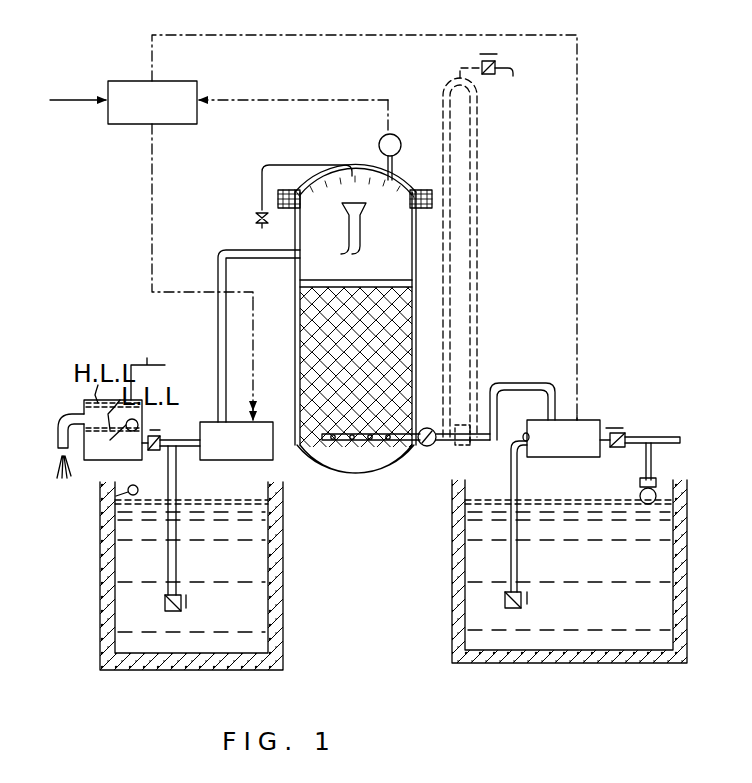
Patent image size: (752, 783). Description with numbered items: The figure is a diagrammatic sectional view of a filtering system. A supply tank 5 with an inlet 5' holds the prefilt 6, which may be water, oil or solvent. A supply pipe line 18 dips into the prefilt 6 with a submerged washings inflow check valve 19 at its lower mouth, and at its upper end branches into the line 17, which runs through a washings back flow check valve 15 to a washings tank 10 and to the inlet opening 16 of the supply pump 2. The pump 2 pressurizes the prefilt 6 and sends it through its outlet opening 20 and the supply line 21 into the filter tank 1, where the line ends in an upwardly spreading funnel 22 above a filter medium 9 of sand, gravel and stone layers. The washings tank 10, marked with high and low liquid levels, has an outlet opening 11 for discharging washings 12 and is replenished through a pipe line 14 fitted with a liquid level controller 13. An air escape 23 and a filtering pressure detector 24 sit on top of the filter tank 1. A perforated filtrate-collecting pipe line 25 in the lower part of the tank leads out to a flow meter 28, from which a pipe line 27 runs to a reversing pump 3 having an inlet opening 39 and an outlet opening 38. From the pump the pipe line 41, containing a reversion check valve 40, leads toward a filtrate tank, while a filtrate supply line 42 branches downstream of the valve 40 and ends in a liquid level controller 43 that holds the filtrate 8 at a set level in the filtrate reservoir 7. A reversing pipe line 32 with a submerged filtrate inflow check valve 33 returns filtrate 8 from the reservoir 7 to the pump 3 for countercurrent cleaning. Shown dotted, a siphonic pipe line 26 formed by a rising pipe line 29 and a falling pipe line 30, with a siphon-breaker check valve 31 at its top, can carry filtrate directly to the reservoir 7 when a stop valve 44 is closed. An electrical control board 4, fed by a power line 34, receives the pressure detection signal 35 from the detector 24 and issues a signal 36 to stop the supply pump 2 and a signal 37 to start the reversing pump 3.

The filter tank 1 is at (293, 270).
The supply pump 2 is at (270, 424).
The reversing pump 3 is at (596, 422).
The electrical control board 4 is at (197, 112).
The supply tank 5 is at (169, 576).
The inlet 5' is at (101, 493).
The prefilt 6 is at (255, 527).
The filtrate reservoir 7 is at (452, 584).
The filtrate 8 is at (468, 552).
The filter medium 9 is at (300, 346).
The washings tank 10 is at (84, 402).
The outlet opening 11 is at (70, 416).
The washings 12 is at (60, 466).
The liquid level controller 13 is at (144, 410).
The pipe line 14 is at (148, 366).
The washings back flow check valve 15 is at (154, 450).
The inlet opening 16 is at (200, 440).
The line 17 is at (185, 446).
The supply pipe line 18 is at (176, 558).
The washings inflow check valve 19 is at (165, 603).
The outlet opening 20 is at (268, 380).
The supply line 21 is at (218, 324).
The funnel 22 is at (346, 212).
The air escape 23 is at (262, 176).
The filtering pressure detector 24 is at (395, 138).
The perforated filtrate-collecting pipe line 25 is at (362, 440).
The siphonic pipe line 26 is at (480, 222).
The pipe line 27 is at (514, 383).
The flow meter 28 is at (430, 446).
The rising pipe line 29 is at (443, 102).
The falling pipe line 30 is at (477, 146).
The check valve 31 is at (490, 74).
The reversing pipe line 32 is at (517, 556).
The filtrate inflow check valve 33 is at (517, 608).
The power line 34 is at (85, 100).
The pressure detection signal 35 is at (322, 100).
The signal 36 is at (152, 178).
The signal 37 is at (270, 35).
The outlet opening 38 is at (560, 408).
The inlet opening 39 is at (527, 436).
The reversion check valve 40 is at (620, 433).
The pipe line 41 is at (662, 437).
The filtrate supply line 42 is at (651, 455).
The liquid level controller 43 is at (660, 496).
The stop valve 44 is at (495, 425).